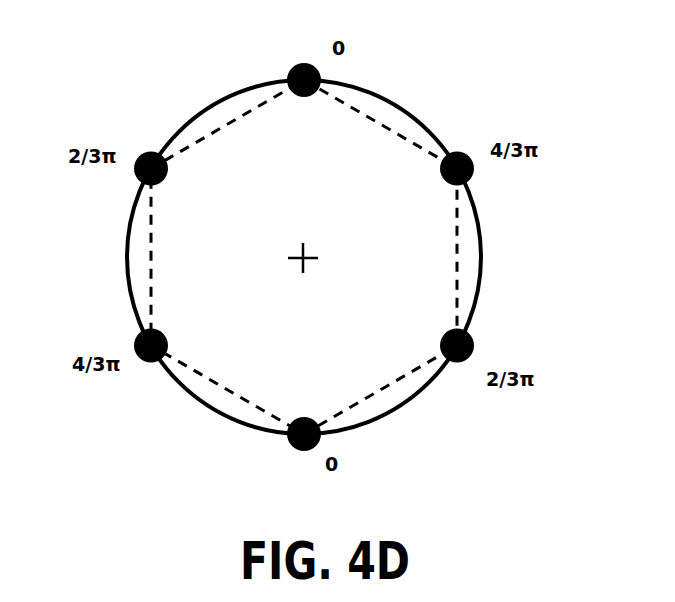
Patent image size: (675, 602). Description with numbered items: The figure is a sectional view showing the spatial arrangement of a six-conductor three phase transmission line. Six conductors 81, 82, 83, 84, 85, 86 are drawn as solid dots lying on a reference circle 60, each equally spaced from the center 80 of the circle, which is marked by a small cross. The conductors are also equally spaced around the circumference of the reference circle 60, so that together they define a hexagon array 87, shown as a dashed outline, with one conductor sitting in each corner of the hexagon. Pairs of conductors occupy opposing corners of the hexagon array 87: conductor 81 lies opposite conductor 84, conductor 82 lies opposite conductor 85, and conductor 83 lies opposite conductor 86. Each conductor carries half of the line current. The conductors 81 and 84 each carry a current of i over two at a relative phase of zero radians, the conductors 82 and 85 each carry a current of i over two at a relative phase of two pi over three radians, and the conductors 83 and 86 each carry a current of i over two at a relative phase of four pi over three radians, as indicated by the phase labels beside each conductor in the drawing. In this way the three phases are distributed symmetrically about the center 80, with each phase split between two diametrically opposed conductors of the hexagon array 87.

The reference circle 60 is at (408, 108).
The center 80 is at (306, 251).
The conductor 81 is at (292, 66).
The conductor 82 is at (142, 180).
The conductor 83 is at (150, 362).
The conductor 84 is at (293, 447).
The conductor 85 is at (472, 340).
The conductor 86 is at (472, 177).
The hexagon array 87 is at (154, 245).